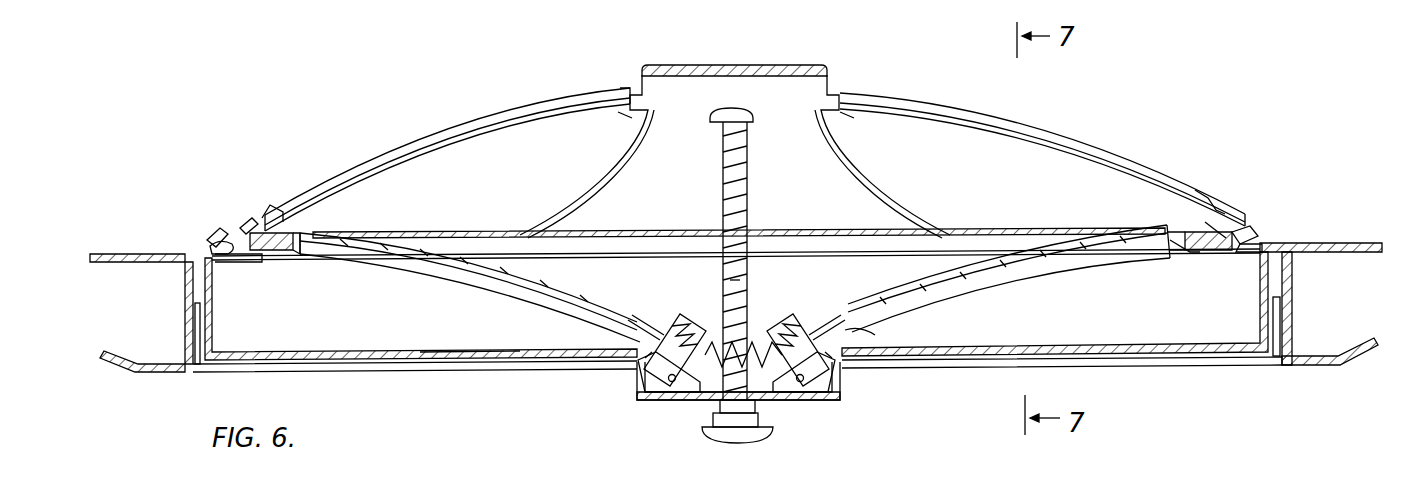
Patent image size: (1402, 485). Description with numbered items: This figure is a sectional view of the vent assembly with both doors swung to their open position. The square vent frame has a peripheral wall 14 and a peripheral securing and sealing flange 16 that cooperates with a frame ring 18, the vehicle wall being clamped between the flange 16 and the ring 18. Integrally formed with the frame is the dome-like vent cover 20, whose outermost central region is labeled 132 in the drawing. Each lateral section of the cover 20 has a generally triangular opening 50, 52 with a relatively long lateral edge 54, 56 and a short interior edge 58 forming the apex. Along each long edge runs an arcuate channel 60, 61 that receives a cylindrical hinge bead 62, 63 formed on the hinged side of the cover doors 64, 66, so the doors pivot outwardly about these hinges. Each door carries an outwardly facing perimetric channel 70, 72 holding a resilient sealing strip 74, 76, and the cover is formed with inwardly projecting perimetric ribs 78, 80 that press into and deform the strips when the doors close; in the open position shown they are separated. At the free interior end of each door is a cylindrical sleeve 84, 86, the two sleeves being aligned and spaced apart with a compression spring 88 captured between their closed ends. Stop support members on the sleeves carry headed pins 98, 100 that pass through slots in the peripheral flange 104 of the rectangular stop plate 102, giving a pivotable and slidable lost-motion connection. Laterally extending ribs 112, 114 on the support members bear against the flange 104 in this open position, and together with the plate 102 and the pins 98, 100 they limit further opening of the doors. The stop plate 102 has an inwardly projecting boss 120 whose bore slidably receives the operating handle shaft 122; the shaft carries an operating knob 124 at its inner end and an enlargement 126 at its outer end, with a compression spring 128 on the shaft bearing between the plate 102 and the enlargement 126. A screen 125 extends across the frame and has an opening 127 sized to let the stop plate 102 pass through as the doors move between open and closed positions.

The peripheral wall 14 is at (1295, 312).
The peripheral securing and sealing flange 16 is at (1350, 250).
The frame ring 18 is at (1315, 365).
The vent cover 20 is at (1008, 118).
The triangular opening 50 is at (422, 148).
The triangular opening 52 is at (1070, 142).
The long lateral edge 54 is at (283, 193).
The long lateral edge 56 is at (1198, 188).
The short interior edge 58 is at (618, 95).
The arcuate channel 60 is at (215, 233).
The arcuate channel 61 is at (1255, 237).
The cylindrical hinge bead 62 is at (210, 246).
The cylindrical hinge bead 63 is at (1255, 245).
The cover door 64 is at (440, 265).
The cover door 66 is at (990, 275).
The perimetric channel 70 is at (258, 262).
The perimetric channel 72 is at (1210, 250).
The resilient sealing strip 74 is at (290, 236).
The resilient sealing strip 76 is at (1192, 248).
The perimetric rib 78 is at (245, 225).
The perimetric rib 80 is at (845, 125).
The cylindrical sleeve 84 is at (695, 320).
The cylindrical sleeve 86 is at (773, 320).
The compression spring 88 is at (705, 382).
The headed pin 98 is at (672, 382).
The headed pin 100 is at (802, 382).
The stop plate 102 is at (812, 396).
The peripheral flange 104 is at (640, 380).
The laterally extending rib 112 is at (640, 365).
The laterally extending rib 114 is at (846, 365).
The boss 120 is at (760, 420).
The operating handle shaft 122 is at (745, 290).
The operating knob 124 is at (750, 443).
The screen 125 is at (475, 352).
The enlargement 126 is at (755, 118).
The opening 127 is at (880, 338).
The compression spring 128 is at (745, 200).
The central cap 132 is at (748, 65).